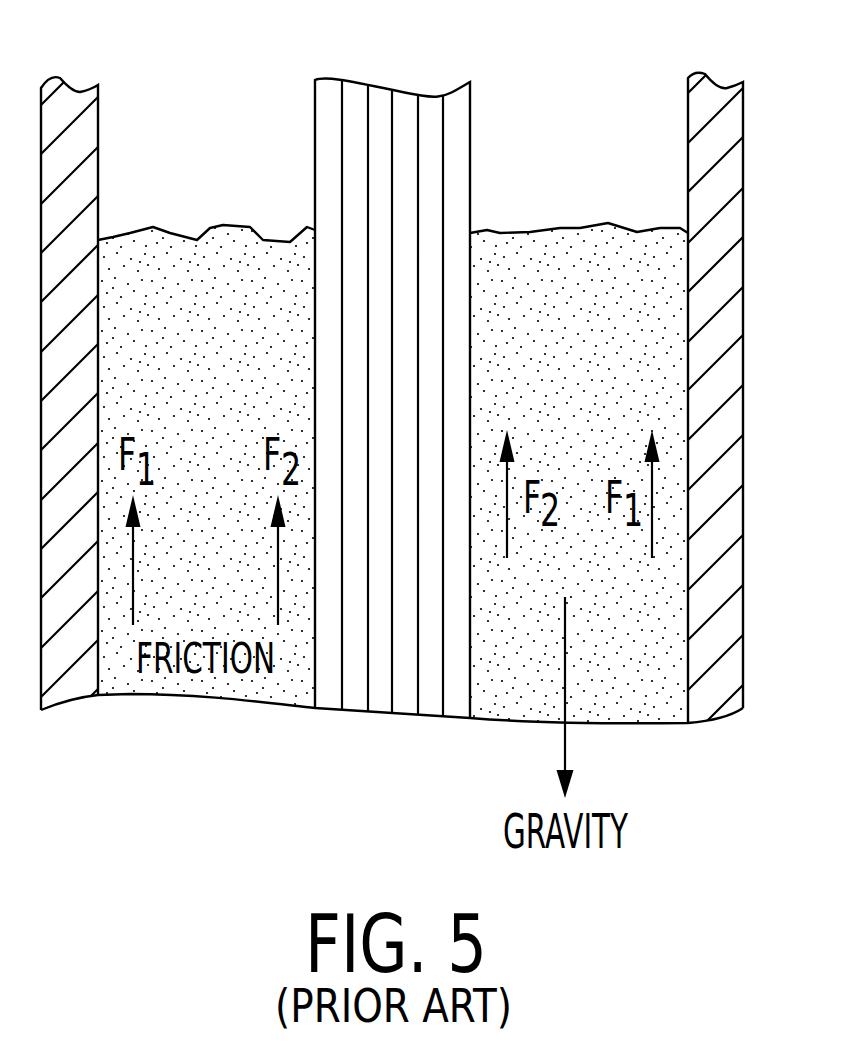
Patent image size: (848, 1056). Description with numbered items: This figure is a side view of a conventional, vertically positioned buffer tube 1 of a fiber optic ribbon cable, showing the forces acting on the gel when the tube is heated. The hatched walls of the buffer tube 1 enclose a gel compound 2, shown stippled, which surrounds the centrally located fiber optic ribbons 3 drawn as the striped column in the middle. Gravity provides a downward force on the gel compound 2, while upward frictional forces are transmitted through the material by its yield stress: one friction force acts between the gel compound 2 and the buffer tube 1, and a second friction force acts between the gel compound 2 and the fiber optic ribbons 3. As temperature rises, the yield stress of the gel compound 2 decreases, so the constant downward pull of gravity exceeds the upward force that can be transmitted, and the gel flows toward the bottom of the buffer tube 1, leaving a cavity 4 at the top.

The buffer tube 1 is at (722, 232).
The gel compound 2 is at (622, 327).
The fiber optic ribbons 3 is at (405, 105).
The cavity 4 is at (603, 125).